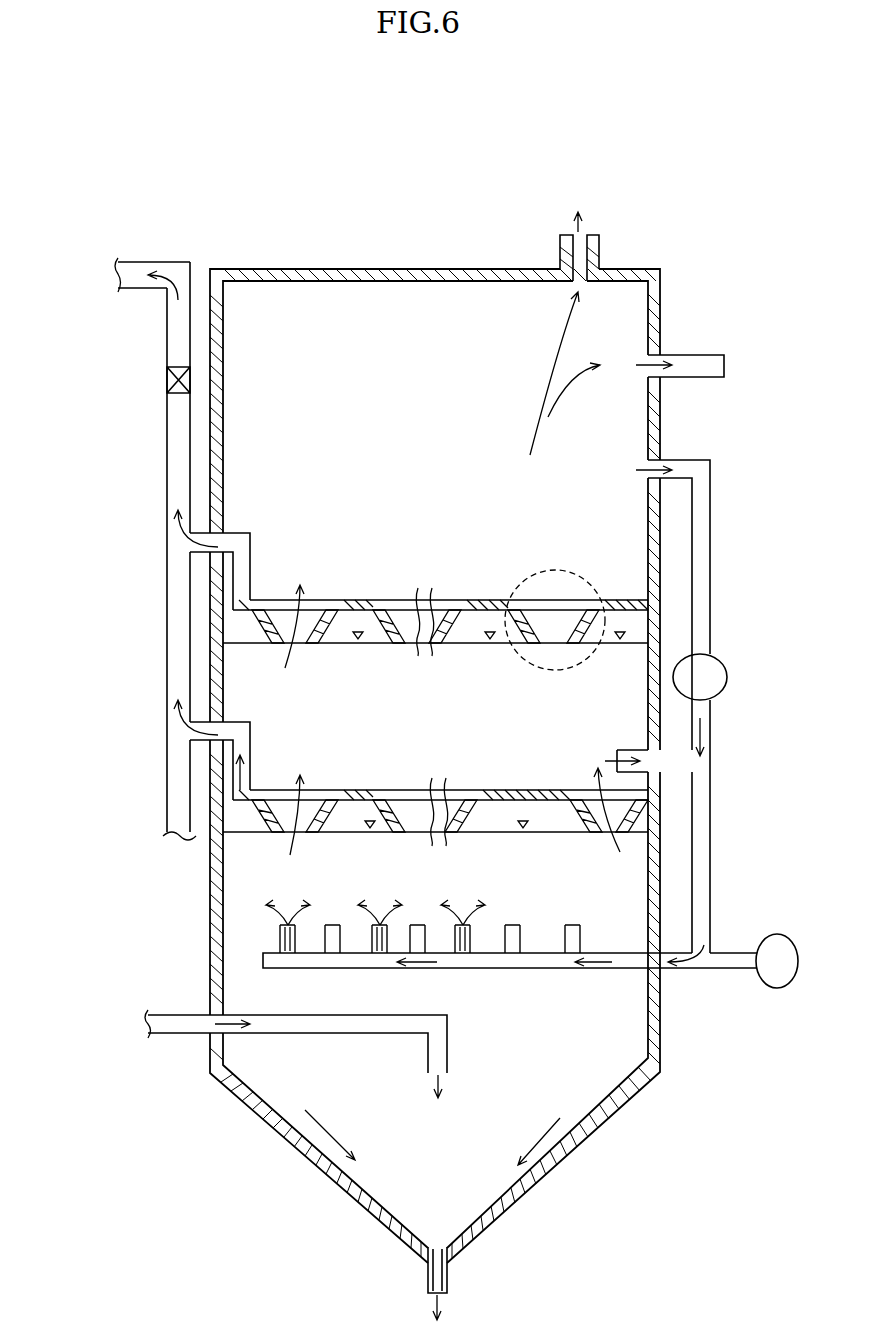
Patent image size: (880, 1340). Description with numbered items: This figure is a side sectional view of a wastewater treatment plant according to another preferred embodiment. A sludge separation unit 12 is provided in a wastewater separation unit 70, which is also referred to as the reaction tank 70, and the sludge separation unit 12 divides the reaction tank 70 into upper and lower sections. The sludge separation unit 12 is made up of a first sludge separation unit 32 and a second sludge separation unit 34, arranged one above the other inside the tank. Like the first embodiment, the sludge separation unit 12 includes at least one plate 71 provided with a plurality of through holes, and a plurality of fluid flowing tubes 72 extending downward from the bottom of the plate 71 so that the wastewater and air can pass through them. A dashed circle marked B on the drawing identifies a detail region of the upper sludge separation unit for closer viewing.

The sludge separation unit 12 is at (83, 697).
The first sludge separation unit 32 is at (252, 644).
The second sludge separation unit 34 is at (241, 816).
The wastewater separation unit 70 is at (694, 423).
The plate 71 is at (516, 790).
The fluid flowing tube 72 is at (648, 812).
The detail region B is at (578, 577).